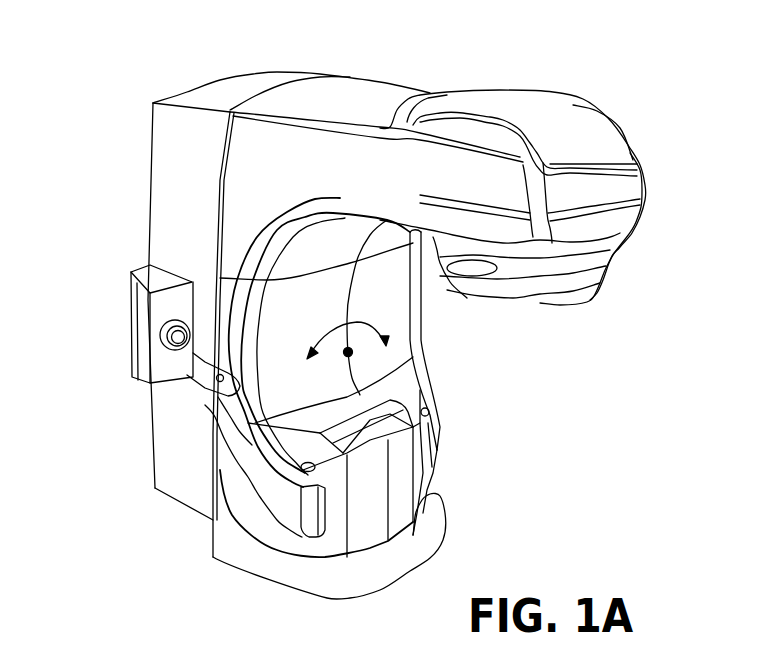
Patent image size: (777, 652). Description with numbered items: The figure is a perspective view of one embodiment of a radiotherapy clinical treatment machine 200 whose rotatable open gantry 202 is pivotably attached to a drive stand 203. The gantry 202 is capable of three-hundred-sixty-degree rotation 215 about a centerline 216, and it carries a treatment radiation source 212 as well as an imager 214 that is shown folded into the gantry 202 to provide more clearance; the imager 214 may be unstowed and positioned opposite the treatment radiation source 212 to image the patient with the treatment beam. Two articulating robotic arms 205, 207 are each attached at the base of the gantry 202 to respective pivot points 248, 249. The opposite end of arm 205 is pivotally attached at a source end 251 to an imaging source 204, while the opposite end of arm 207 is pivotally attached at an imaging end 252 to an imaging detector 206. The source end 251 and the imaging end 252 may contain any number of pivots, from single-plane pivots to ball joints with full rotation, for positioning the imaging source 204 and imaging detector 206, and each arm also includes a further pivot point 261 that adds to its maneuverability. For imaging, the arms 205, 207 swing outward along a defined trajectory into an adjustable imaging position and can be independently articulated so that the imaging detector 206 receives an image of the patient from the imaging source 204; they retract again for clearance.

The radiotherapy clinical treatment machine 200 is at (727, 49).
The rotatable open gantry 202 is at (390, 68).
The drive stand 203 is at (150, 160).
The imaging source 204 is at (128, 323).
The robotic arm 205 is at (237, 484).
The imaging detector 206 is at (424, 298).
The robotic arm 207 is at (430, 388).
The treatment radiation source 212 is at (607, 278).
The imager 214 is at (403, 505).
The 360-degree rotation 215 is at (348, 328).
The centerline 216 is at (352, 354).
The pivot point 248 is at (300, 487).
The pivot point 249 is at (437, 412).
The source end 251 is at (143, 383).
The imaging end 252 is at (420, 324).
The pivot point 261 is at (203, 390).